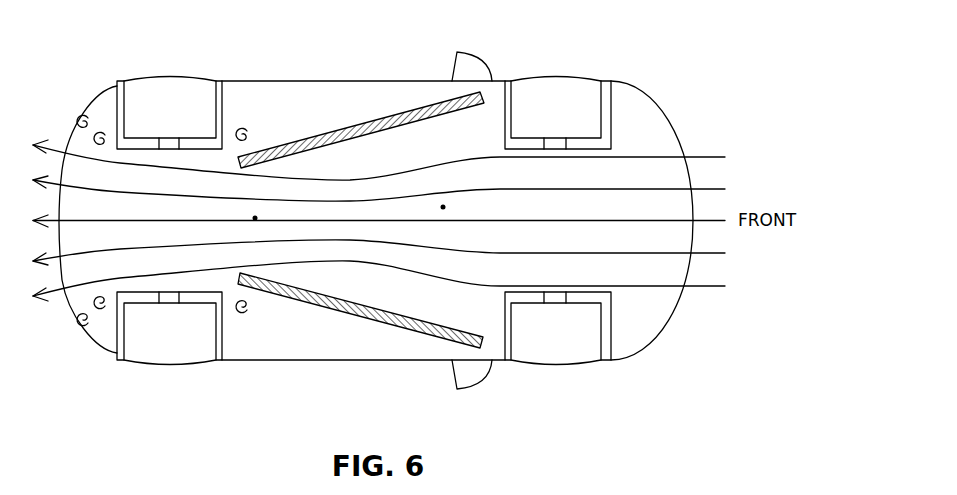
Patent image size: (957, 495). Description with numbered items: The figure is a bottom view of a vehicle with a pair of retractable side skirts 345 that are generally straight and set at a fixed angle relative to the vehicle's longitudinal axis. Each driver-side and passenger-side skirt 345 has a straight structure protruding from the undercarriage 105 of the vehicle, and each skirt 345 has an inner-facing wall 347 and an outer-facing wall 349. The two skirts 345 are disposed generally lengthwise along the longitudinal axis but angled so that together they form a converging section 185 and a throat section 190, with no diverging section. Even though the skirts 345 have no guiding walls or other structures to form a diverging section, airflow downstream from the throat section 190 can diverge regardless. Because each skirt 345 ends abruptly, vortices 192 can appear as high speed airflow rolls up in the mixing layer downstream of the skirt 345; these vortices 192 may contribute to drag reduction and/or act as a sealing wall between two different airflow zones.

The undercarriage 105 is at (483, 132).
The converging section 185 is at (443, 207).
The throat section 190 is at (255, 218).
The vortices 192 is at (80, 116).
The side skirt 345 is at (315, 136).
The inner-facing wall 347 is at (414, 121).
The outer-facing wall 349 is at (382, 118).